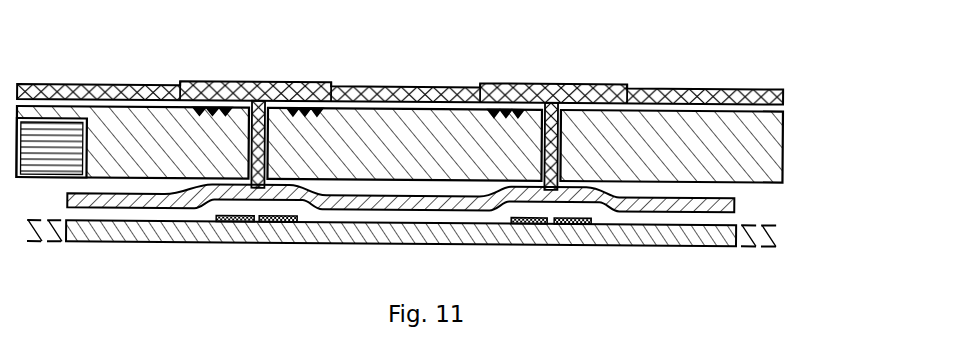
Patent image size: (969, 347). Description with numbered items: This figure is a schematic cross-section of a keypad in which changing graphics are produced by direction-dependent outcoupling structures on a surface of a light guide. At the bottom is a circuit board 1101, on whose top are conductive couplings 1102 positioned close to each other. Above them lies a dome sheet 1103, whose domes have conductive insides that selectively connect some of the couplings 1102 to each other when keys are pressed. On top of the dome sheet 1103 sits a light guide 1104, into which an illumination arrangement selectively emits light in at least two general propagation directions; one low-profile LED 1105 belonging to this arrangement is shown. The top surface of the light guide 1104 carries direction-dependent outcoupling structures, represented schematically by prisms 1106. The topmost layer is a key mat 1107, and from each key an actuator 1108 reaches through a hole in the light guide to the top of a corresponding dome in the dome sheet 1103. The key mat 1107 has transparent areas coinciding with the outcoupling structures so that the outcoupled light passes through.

The circuit board 1101 is at (645, 238).
The conductive couplings 1102 is at (567, 224).
The dome sheet 1103 is at (736, 204).
The light guide 1104 is at (775, 163).
The low-profile LED 1105 is at (65, 127).
The prisms 1106 is at (302, 110).
The key mat 1107 is at (785, 93).
The actuator 1108 is at (258, 141).